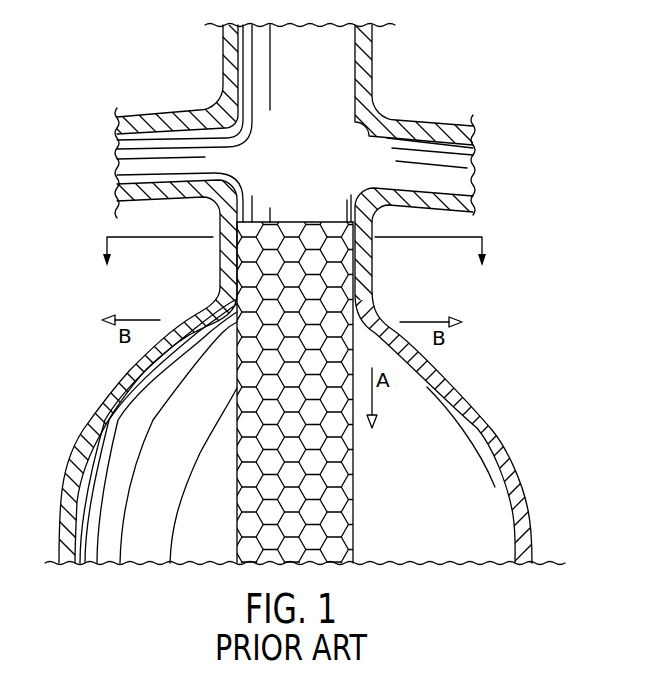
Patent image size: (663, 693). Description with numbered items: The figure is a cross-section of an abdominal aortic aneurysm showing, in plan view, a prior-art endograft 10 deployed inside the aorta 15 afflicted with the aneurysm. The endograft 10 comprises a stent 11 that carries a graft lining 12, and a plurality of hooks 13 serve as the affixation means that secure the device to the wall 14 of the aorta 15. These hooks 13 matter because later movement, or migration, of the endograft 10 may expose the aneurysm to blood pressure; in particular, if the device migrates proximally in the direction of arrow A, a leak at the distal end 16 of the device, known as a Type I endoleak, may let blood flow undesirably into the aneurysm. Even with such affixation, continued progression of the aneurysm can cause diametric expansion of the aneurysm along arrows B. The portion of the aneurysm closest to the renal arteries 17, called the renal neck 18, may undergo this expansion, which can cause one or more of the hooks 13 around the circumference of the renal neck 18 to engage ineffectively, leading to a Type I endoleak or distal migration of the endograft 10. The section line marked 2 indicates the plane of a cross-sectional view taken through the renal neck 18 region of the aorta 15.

The endograft 10 is at (396, 486).
The stent 11 is at (237, 498).
The graft lining 12 is at (237, 523).
The hooks 13 is at (295, 222).
The wall 14 is at (490, 421).
The aorta 15 is at (203, 272).
The distal end 16 is at (333, 199).
The renal arteries 17 is at (440, 123).
The renal neck 18 is at (372, 270).
The section line 2- 2 is at (293, 265).